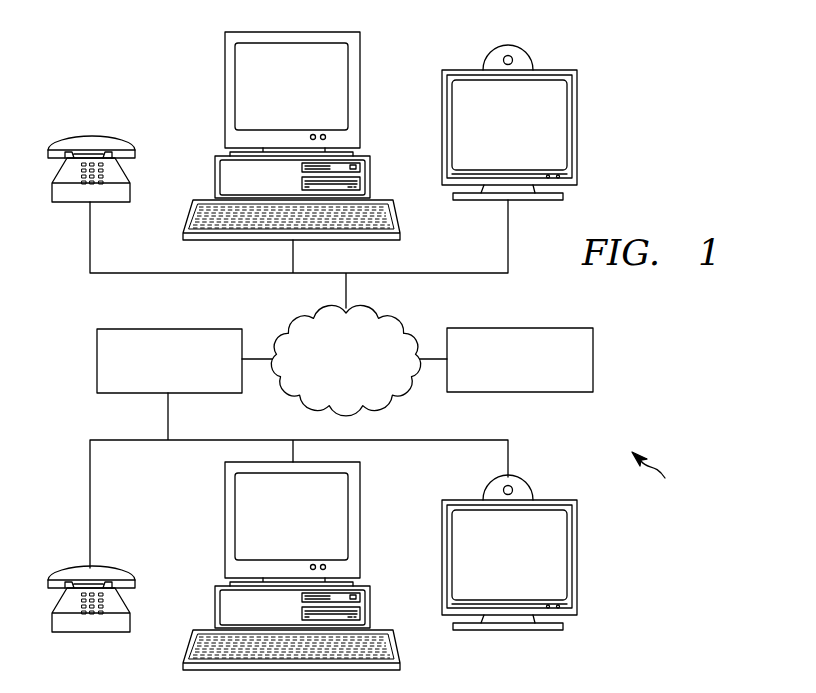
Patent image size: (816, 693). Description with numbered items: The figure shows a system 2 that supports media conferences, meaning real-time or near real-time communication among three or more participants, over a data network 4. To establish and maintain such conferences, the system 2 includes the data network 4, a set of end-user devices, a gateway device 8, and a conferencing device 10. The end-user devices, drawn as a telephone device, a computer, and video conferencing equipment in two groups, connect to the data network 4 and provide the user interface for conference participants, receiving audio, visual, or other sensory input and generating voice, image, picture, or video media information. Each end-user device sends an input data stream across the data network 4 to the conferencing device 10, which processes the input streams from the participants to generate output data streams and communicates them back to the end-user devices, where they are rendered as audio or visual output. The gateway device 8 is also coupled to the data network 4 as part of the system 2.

The system 2 is at (654, 479).
The data network 4 is at (288, 322).
The gateway device 8 is at (97, 362).
The conferencing device 10 is at (593, 357).